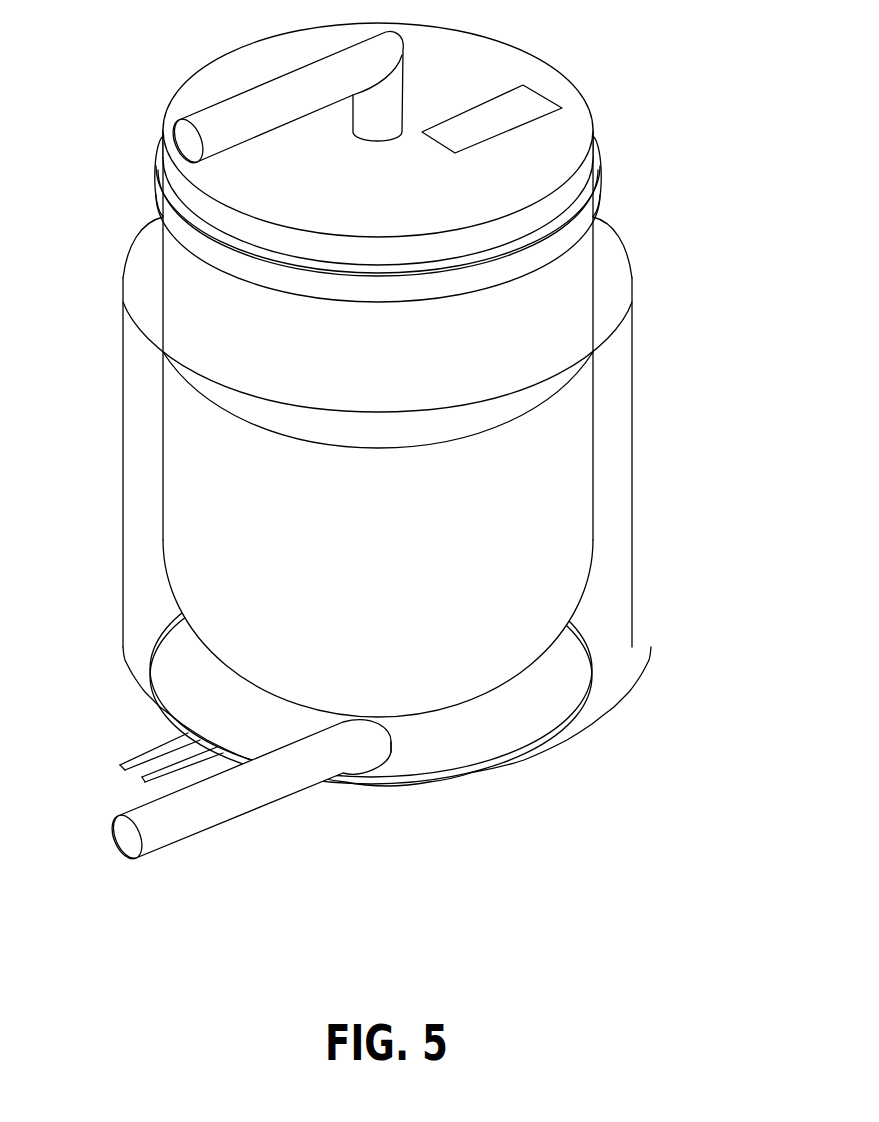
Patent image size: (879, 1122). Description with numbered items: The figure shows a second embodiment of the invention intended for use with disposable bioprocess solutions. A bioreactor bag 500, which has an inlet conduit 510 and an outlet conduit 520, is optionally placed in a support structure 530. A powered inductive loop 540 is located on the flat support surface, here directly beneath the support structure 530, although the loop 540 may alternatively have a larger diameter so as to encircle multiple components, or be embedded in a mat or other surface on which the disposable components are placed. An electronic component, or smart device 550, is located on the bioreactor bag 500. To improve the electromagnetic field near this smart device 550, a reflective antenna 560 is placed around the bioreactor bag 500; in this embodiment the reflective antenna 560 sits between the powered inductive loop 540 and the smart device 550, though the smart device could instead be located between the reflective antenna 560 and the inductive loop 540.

The bioreactor bag 500 is at (563, 298).
The inlet conduit 510 is at (183, 138).
The outlet conduit 520 is at (177, 841).
The support structure 530 is at (632, 463).
The powered inductive loop 540 is at (500, 762).
The smart device 550 is at (540, 96).
The reflective antenna 560 is at (600, 188).